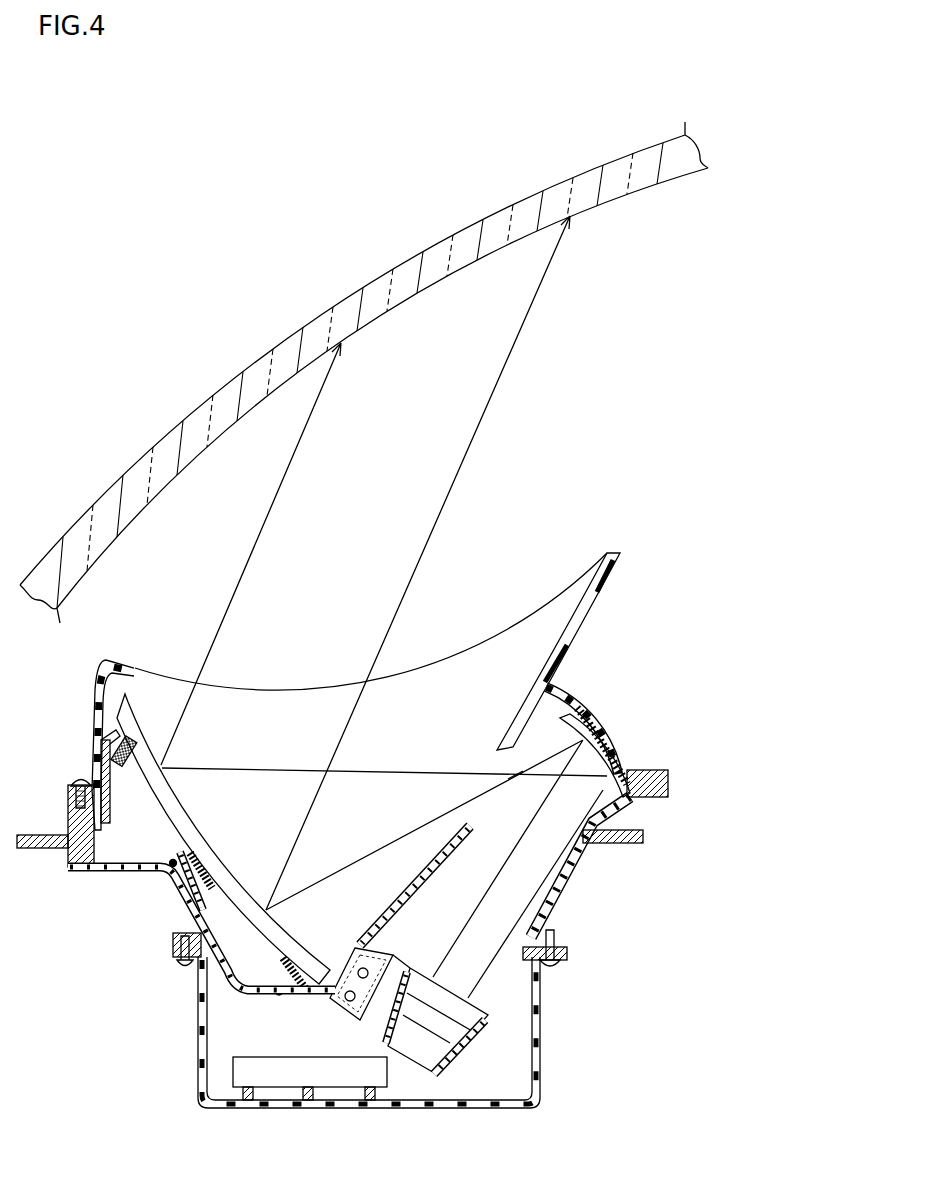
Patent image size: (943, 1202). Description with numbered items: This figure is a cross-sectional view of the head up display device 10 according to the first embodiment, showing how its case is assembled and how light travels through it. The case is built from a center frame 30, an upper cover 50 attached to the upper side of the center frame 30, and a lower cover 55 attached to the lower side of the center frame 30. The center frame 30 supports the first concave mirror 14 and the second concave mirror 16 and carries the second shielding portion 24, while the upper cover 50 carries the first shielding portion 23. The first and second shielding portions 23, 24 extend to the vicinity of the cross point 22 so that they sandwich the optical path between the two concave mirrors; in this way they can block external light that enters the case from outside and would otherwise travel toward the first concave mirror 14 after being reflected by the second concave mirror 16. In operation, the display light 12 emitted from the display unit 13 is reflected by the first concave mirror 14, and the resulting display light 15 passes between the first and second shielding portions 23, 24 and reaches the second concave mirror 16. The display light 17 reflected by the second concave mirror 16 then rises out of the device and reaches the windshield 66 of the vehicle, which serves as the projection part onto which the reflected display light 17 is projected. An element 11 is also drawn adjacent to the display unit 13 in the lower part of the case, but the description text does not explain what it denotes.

The windshield 66 is at (392, 270).
The display light 17 is at (228, 608).
The head up display device 10 is at (667, 546).
The upper cover 50 is at (92, 735).
The center frame 30 is at (68, 868).
The second concave mirror 16 is at (165, 808).
The first shielding portion 23 is at (523, 705).
The display light 12 is at (568, 872).
The first concave mirror 14 is at (600, 747).
The display light 15 is at (413, 772).
The cross point 22 is at (516, 776).
The second shielding portion 24 is at (420, 878).
The projector unit 11 is at (415, 1047).
The display unit 13 is at (488, 1020).
The lower cover 55 is at (196, 1030).